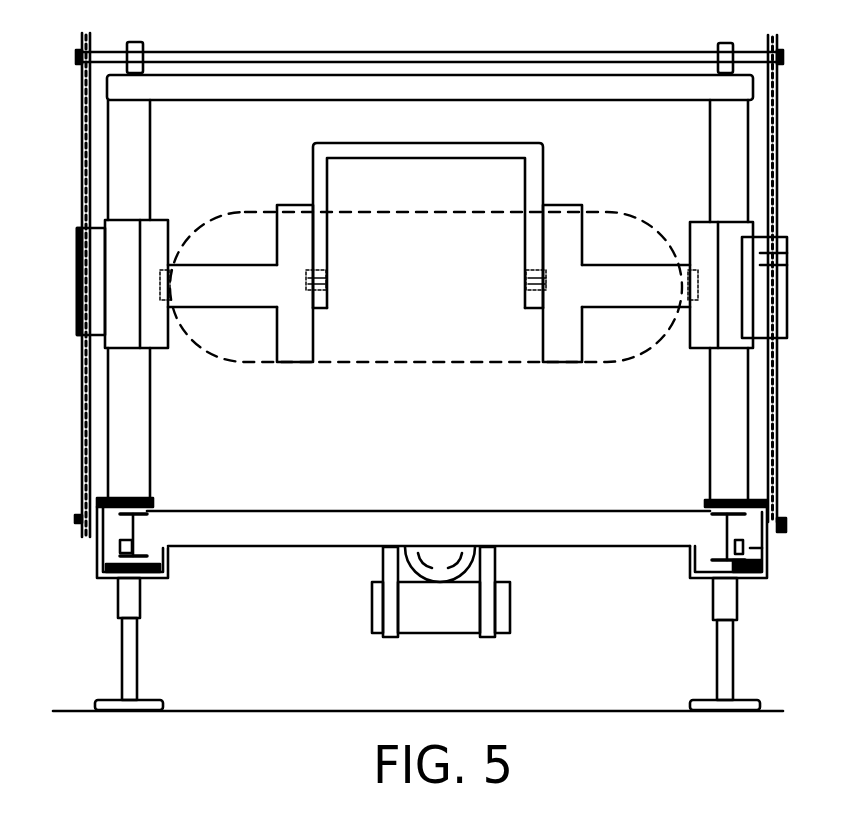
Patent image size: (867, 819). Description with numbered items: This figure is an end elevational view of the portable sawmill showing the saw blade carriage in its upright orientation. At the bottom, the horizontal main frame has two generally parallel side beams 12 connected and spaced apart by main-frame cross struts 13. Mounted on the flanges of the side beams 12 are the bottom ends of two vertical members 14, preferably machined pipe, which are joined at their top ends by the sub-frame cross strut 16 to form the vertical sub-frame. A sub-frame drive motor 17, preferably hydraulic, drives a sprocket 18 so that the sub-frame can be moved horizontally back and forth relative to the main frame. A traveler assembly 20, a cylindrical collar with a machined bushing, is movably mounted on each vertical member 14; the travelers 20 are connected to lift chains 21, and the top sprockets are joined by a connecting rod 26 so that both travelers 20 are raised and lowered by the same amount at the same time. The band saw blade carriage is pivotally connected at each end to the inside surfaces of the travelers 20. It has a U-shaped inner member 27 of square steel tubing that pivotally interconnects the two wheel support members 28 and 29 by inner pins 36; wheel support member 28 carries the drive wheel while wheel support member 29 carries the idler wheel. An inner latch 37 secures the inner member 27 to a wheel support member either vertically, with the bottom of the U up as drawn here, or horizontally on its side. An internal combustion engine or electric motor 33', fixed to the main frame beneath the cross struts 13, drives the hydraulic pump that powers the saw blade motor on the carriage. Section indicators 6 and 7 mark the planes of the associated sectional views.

The section line 6- 6 is at (75, 532).
The section line 7- 7 is at (345, 133).
The side beam 12 is at (137, 522).
The main-frame cross strut 13 is at (399, 544).
The vertical member 14 is at (143, 401).
The sub-frame cross strut 16 is at (224, 88).
The sub-frame drive motor 17 is at (786, 522).
The sprocket 18 is at (752, 548).
The traveler assembly 20 is at (168, 218).
The lift chain 21 is at (82, 170).
The connecting rod 26 is at (370, 56).
The U-shaped inner member 27 is at (420, 143).
The wheel support member 28 is at (313, 350).
The wheel support member 29 is at (543, 343).
The internal combustion engine or electric motor 33' is at (441, 555).
The inner pin 36 is at (170, 288).
The inner latch 37 is at (330, 276).